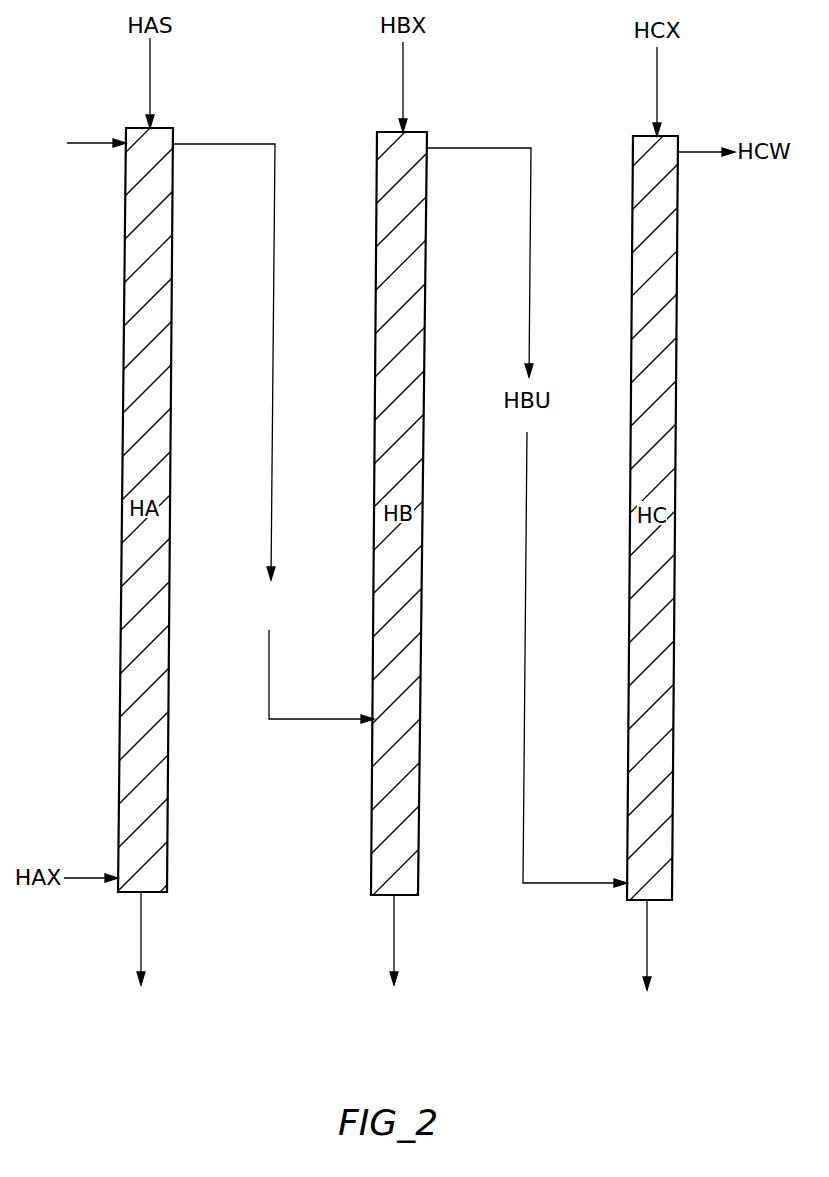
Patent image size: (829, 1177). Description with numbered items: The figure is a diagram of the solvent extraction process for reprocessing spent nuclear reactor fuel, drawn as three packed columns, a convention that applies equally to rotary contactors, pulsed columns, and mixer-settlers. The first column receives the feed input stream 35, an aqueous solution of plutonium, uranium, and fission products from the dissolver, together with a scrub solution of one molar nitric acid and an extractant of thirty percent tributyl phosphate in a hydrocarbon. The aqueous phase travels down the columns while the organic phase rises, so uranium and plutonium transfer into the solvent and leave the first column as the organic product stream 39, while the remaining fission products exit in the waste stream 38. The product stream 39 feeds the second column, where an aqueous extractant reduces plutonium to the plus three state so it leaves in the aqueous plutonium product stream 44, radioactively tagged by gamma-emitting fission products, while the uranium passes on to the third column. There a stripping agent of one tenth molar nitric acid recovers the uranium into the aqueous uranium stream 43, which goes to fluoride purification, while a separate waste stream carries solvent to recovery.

The HAF input stream 35 is at (86, 146).
The HAW waste stream 38 is at (143, 935).
The HAP stream 39 is at (274, 318).
The HCU stream 43 is at (649, 942).
The HBP stream 44 is at (396, 940).